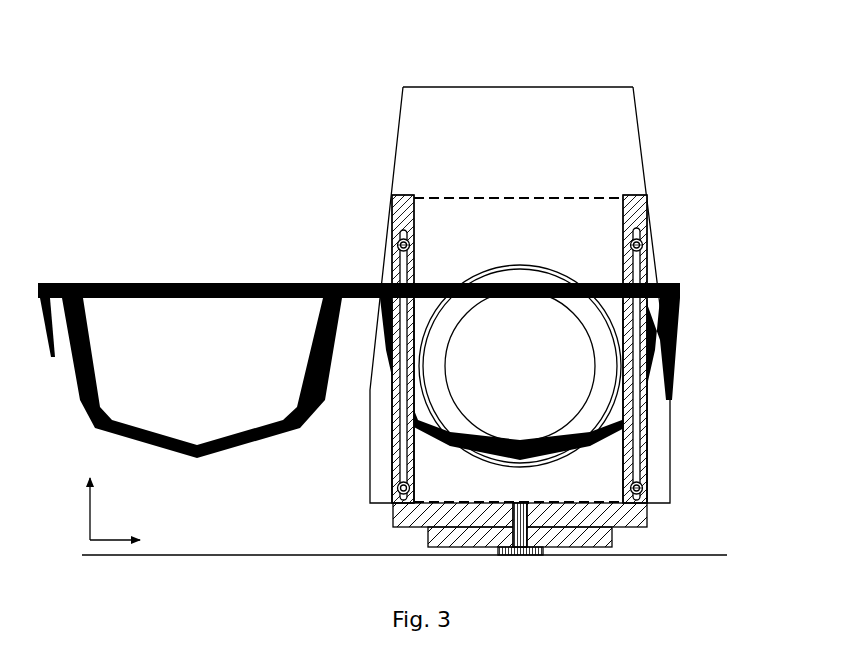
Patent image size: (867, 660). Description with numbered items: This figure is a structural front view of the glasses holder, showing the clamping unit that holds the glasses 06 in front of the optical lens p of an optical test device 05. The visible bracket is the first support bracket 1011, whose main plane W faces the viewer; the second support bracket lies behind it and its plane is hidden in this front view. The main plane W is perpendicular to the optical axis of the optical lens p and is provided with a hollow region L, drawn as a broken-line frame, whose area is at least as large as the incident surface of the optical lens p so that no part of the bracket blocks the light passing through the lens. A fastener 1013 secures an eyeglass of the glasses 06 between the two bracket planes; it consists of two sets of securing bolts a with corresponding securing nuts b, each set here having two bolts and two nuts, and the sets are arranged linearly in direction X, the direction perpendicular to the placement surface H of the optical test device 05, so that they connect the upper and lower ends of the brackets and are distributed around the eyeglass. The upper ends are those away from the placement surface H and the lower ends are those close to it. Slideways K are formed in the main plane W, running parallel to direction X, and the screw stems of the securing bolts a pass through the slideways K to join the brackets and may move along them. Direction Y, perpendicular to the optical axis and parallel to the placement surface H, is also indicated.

The upper housing body 05 is at (560, 103).
The glasses 06 is at (255, 283).
The first support bracket 1011 is at (638, 198).
The fastener 1013 is at (715, 453).
The securing bolts a is at (643, 235).
The securing nuts b is at (642, 245).
The slideway K is at (633, 452).
The hollow region L is at (497, 198).
The optical lens p is at (520, 366).
The placement surface H is at (404, 546).
The direction X is at (81, 509).
The direction Y is at (115, 529).
The main plane W is at (403, 221).